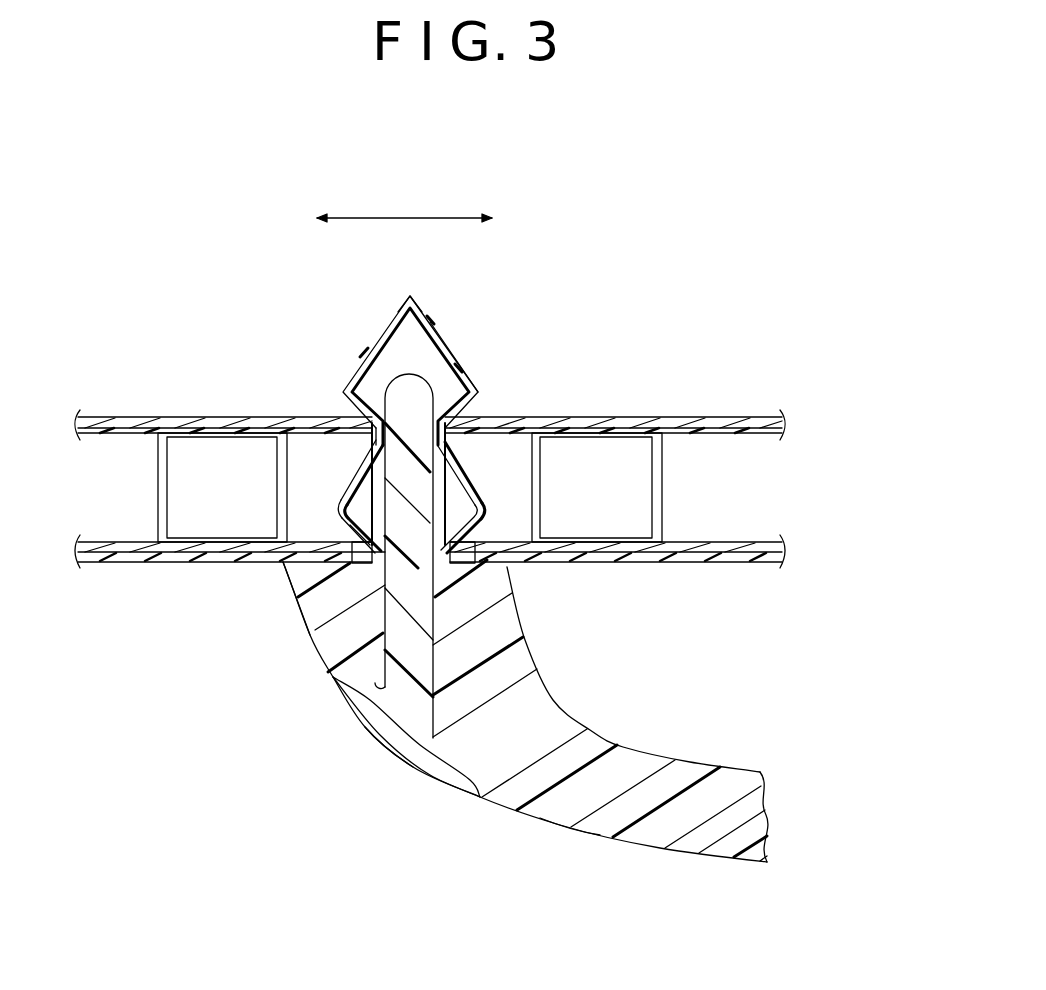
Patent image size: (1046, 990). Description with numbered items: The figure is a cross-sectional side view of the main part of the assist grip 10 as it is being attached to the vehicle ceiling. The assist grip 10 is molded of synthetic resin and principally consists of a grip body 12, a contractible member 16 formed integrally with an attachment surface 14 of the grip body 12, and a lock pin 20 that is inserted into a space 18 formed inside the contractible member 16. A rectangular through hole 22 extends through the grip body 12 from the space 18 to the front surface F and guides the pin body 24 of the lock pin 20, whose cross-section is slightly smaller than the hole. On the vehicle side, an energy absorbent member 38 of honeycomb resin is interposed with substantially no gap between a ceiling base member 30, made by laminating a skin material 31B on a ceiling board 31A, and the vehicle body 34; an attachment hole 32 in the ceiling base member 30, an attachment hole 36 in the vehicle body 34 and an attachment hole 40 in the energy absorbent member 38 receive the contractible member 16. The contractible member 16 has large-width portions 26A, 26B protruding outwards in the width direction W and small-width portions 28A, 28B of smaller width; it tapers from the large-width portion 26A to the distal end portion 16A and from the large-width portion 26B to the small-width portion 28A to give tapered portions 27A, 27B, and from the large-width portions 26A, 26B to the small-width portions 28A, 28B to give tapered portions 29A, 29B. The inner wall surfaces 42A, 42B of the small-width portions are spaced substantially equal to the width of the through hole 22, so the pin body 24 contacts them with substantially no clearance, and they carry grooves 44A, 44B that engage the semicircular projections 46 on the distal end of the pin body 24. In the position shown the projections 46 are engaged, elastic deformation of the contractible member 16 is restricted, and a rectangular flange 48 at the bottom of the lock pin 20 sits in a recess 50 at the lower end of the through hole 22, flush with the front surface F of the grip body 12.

The assist grip 10 is at (506, 326).
The grip body 12 is at (660, 832).
The attachment surface 14 is at (292, 560).
The contractible member 16 is at (445, 318).
The distal end portion 16A is at (410, 296).
The space 18 is at (394, 368).
The lock pin 20 is at (360, 727).
The through hole 22 is at (385, 585).
The pin body 24 is at (397, 643).
The large-width portion 26A is at (358, 372).
The large-width portion 26B is at (347, 505).
The tapered portion 27A is at (378, 340).
The tapered portion 27B is at (352, 490).
The small-width portion 28A is at (372, 430).
The small-width portion 28B is at (370, 552).
The tapered portion 29A is at (348, 392).
The tapered portion 29B is at (350, 515).
The ceiling base member 30 is at (866, 524).
The ceiling board 31A is at (774, 548).
The skin material 31B is at (770, 562).
The attachment hole 32 is at (480, 602).
The vehicle body 34 is at (765, 413).
The attachment hole 36 is at (478, 420).
The energy absorbent member 38 is at (762, 436).
The attachment hole 40 is at (508, 500).
The inner wall surfaces 42A is at (432, 400).
The inner wall surfaces 42B is at (508, 472).
The grooves 44A is at (470, 445).
The grooves 44B is at (512, 625).
The projections 46 is at (376, 438).
The flange 48 is at (470, 790).
The recess 50 is at (455, 760).
The width direction W is at (405, 218).
The front surface F is at (555, 828).